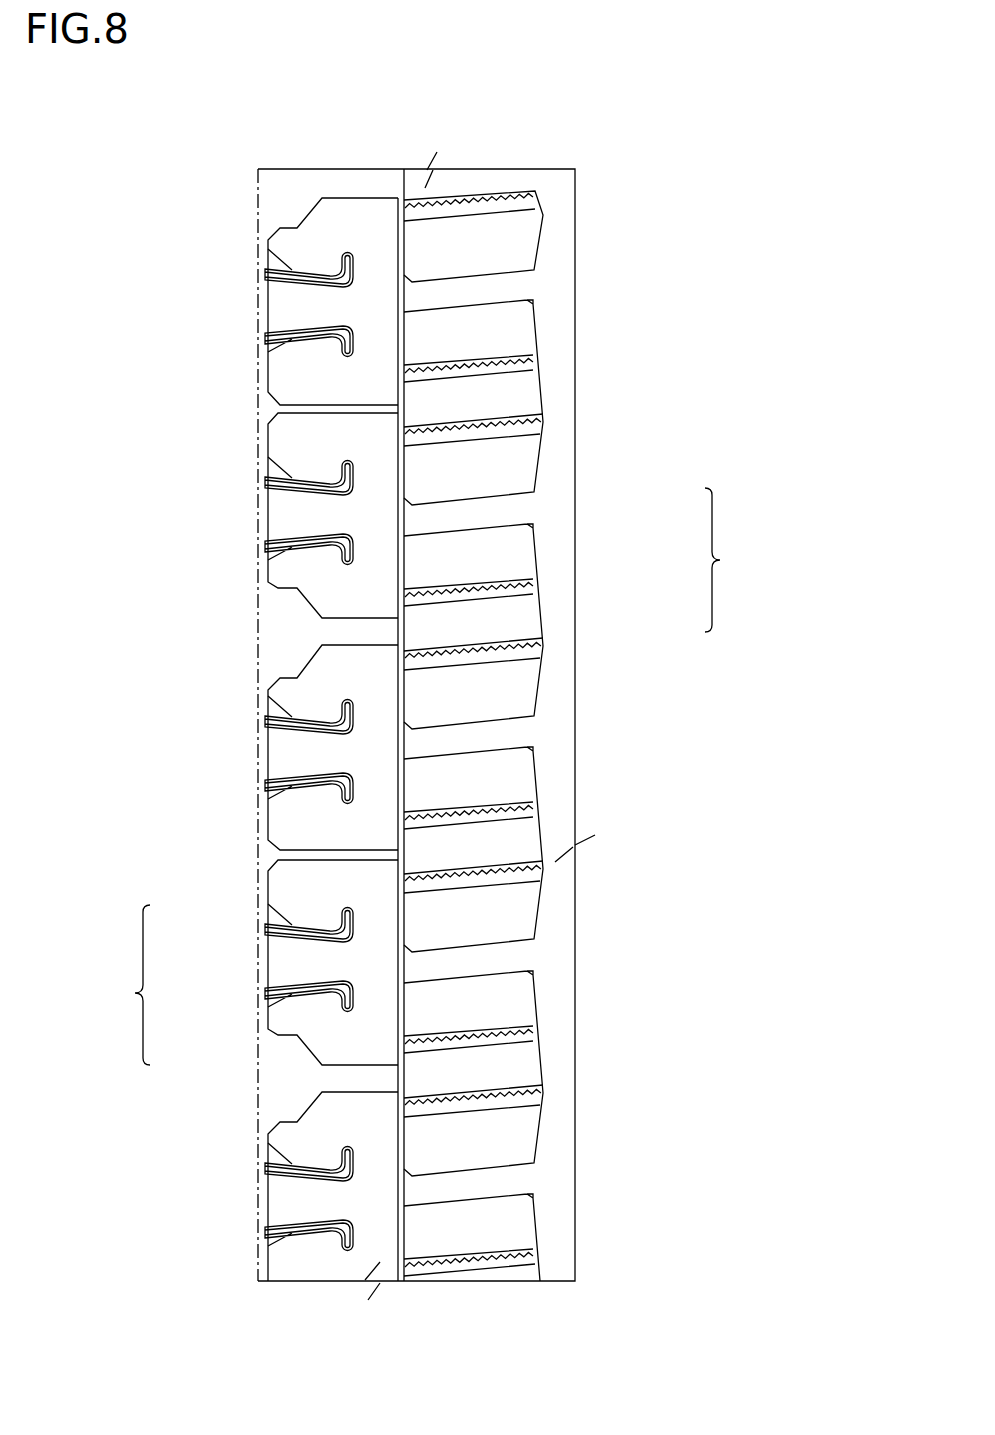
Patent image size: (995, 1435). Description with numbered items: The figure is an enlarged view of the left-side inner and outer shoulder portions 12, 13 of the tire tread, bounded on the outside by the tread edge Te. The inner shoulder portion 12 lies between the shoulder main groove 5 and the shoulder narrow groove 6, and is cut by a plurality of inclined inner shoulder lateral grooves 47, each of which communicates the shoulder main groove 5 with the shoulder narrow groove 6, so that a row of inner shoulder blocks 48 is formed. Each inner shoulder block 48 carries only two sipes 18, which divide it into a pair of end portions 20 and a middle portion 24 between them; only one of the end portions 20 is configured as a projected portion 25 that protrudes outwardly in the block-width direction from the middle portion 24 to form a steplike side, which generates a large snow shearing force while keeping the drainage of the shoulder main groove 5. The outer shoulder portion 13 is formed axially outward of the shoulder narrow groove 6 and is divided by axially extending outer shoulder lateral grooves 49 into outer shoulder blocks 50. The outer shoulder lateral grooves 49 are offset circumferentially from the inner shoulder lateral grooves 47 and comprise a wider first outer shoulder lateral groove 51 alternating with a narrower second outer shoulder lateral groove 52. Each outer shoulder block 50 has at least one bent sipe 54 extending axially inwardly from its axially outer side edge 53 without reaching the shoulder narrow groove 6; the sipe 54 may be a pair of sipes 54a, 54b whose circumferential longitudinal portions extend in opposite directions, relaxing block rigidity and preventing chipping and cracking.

The tread edge Te is at (257, 196).
The outer shoulder portion 13 is at (340, 224).
The shoulder narrow groove 6 is at (401, 238).
The inner shoulder portion 12 is at (453, 243).
The shoulder main groove 5 is at (553, 200).
The inner shoulder lateral groove 47 is at (482, 290).
The projected portion 25 is at (528, 335).
The inner shoulder block 48 is at (584, 734).
The end portion 20 is at (480, 573).
The sipe 18 is at (504, 582).
The middle portion 24 is at (511, 590).
The outer shoulder block 50 is at (327, 310).
The second outer shoulder lateral groove 52 is at (330, 408).
The first outer shoulder lateral groove 51 is at (350, 633).
The axially outer side edge 53 is at (262, 506).
The sipe 54 is at (293, 480).
The sipe 54a is at (293, 718).
The sipe 54b is at (293, 787).
The outer shoulder lateral groove 49 is at (119, 985).